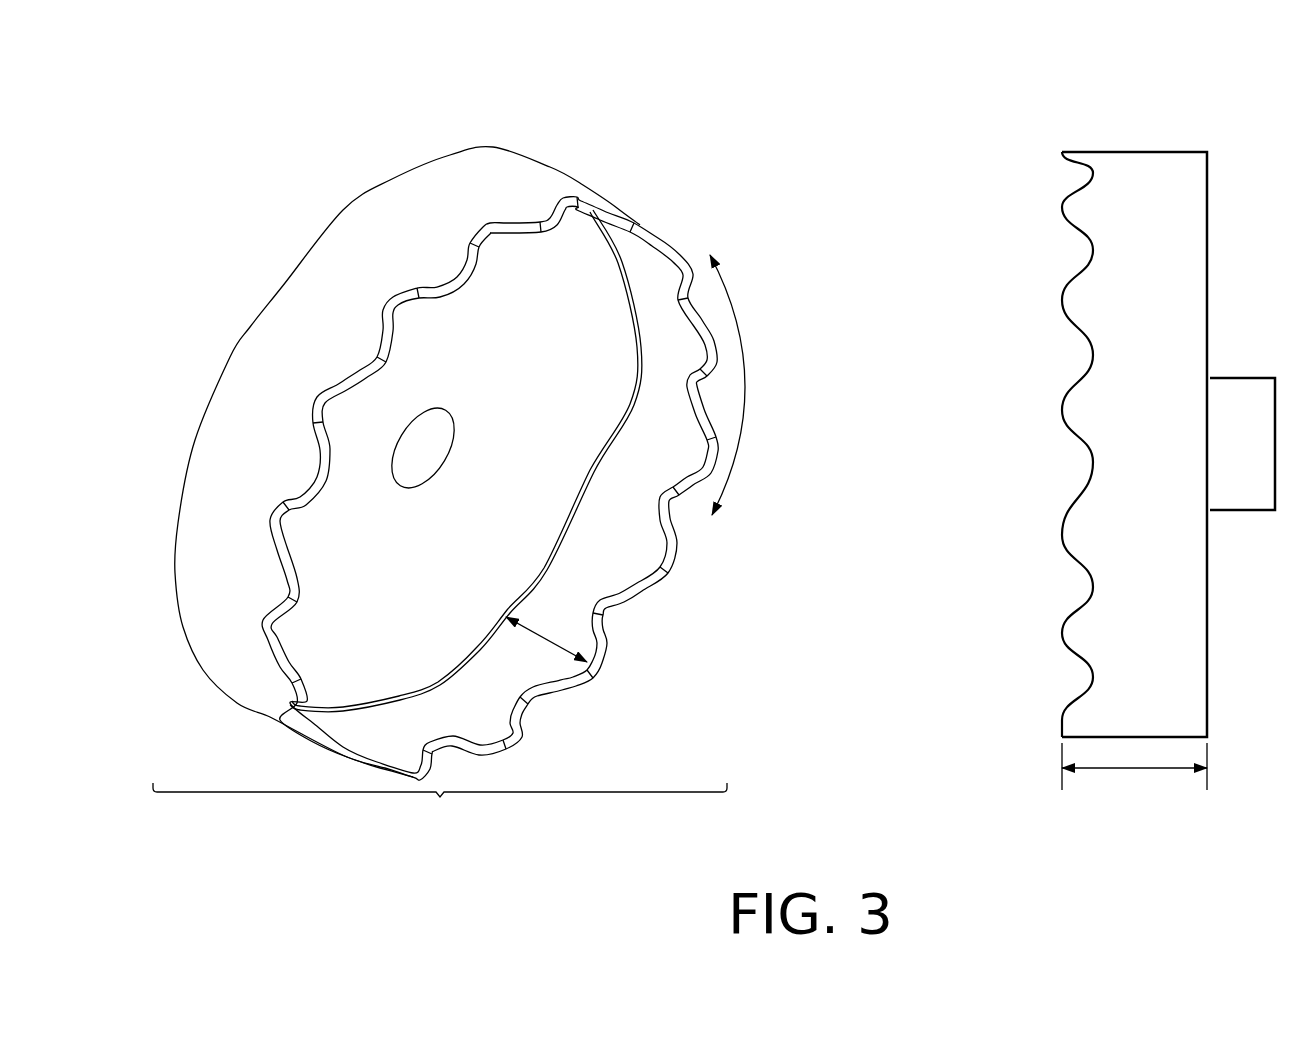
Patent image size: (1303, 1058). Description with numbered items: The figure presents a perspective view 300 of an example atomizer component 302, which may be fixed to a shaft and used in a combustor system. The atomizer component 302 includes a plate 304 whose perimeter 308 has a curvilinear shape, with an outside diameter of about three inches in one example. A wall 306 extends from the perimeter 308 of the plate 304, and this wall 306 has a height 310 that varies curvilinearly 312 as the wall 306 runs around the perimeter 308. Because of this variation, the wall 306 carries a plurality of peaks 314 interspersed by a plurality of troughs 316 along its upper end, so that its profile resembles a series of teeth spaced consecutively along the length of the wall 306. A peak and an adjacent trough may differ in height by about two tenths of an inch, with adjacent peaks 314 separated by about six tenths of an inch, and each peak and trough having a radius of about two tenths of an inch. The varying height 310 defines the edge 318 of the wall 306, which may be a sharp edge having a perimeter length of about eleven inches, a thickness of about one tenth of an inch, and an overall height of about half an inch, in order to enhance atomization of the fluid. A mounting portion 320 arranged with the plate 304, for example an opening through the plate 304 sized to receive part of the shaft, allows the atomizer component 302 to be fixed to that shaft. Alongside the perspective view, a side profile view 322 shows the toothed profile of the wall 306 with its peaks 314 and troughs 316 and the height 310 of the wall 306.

The perspective view 300 is at (187, 63).
The atomizer component 302 is at (440, 804).
The plate 304 is at (582, 365).
The wall 306 is at (680, 365).
The perimeter 308 is at (617, 421).
The height 310 is at (547, 644).
The curvilinear variation 312 is at (747, 373).
The peaks 314 is at (660, 568).
The troughs 316 is at (667, 497).
The edge 318 is at (660, 588).
The mounting portion 320 is at (457, 460).
The side profile view 322 is at (960, 68).